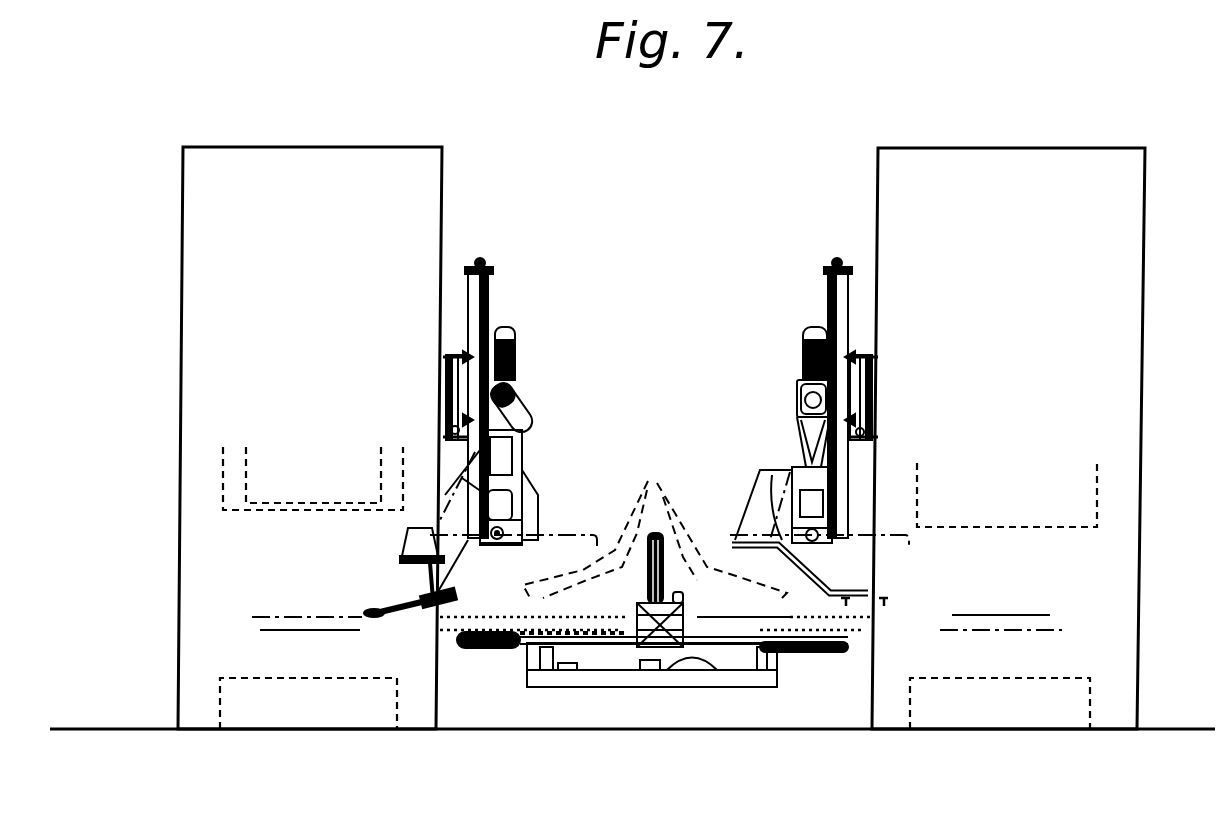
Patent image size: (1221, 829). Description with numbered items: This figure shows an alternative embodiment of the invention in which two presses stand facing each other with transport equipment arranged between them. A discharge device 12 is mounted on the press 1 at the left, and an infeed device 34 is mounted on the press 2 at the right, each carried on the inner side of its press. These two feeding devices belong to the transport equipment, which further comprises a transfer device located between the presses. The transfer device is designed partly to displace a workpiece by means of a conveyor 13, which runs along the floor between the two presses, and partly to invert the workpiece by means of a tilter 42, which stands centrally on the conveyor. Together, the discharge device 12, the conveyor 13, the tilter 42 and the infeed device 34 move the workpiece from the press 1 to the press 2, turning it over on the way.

The press 1 is at (412, 173).
The press 2 is at (1038, 162).
The discharge device 12 is at (518, 415).
The infeed device 34 is at (792, 386).
The conveyor 13 is at (488, 650).
The tilter 42 is at (633, 623).